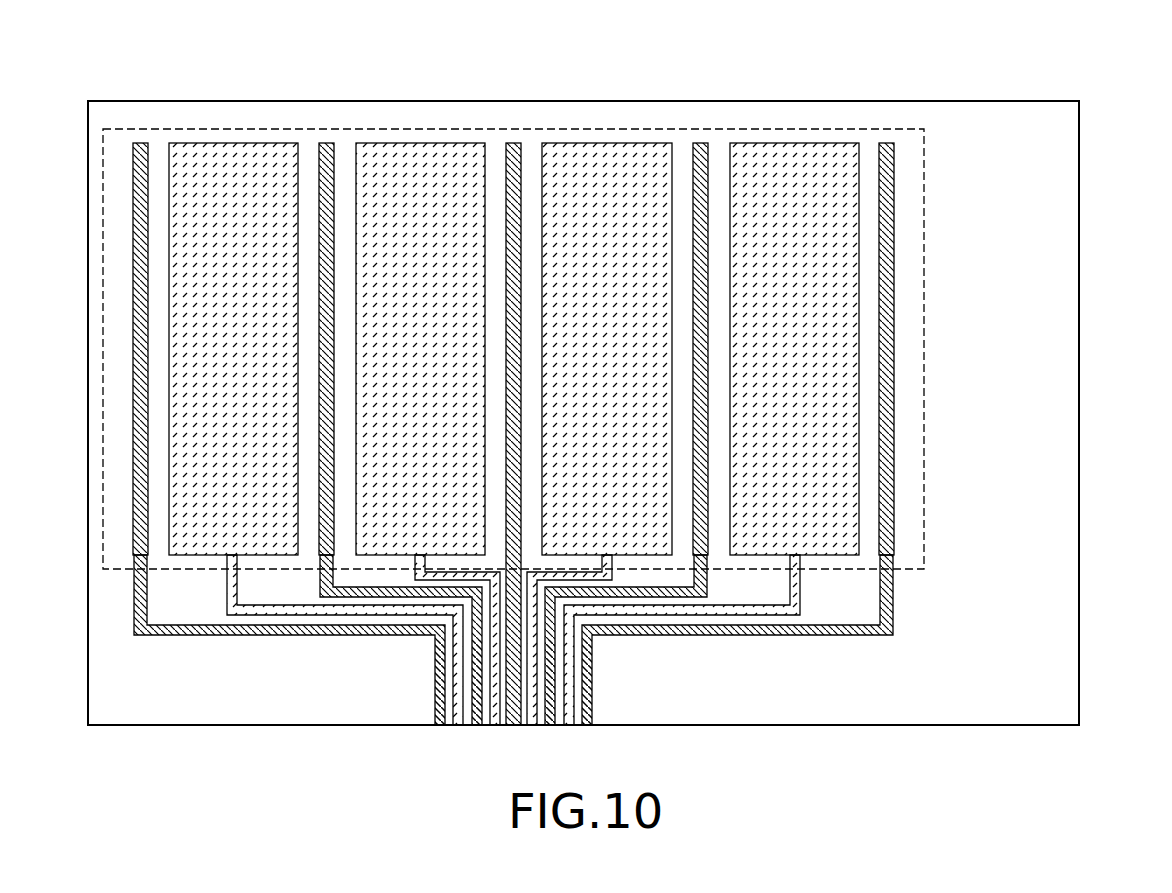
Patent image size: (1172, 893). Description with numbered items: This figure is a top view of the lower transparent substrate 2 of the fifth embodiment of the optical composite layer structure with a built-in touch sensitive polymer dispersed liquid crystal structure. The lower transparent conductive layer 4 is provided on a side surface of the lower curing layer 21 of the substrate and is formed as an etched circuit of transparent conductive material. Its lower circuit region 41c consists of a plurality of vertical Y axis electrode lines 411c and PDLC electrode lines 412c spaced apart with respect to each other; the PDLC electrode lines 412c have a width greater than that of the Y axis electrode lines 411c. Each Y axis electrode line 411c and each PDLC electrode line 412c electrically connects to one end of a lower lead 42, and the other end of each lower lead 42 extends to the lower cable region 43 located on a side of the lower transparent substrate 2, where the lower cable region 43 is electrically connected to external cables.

The lower transparent substrate 2 is at (1030, 101).
The lower curing layer 21 is at (1063, 137).
The lower transparent conductive layer 4 is at (650, 127).
The lower circuit region 41c is at (809, 129).
The Y axis electrode line 411c is at (140, 143).
The PDLC electrode line 412c is at (227, 160).
The lower lead 42 is at (819, 637).
The lower cable region 43 is at (433, 673).